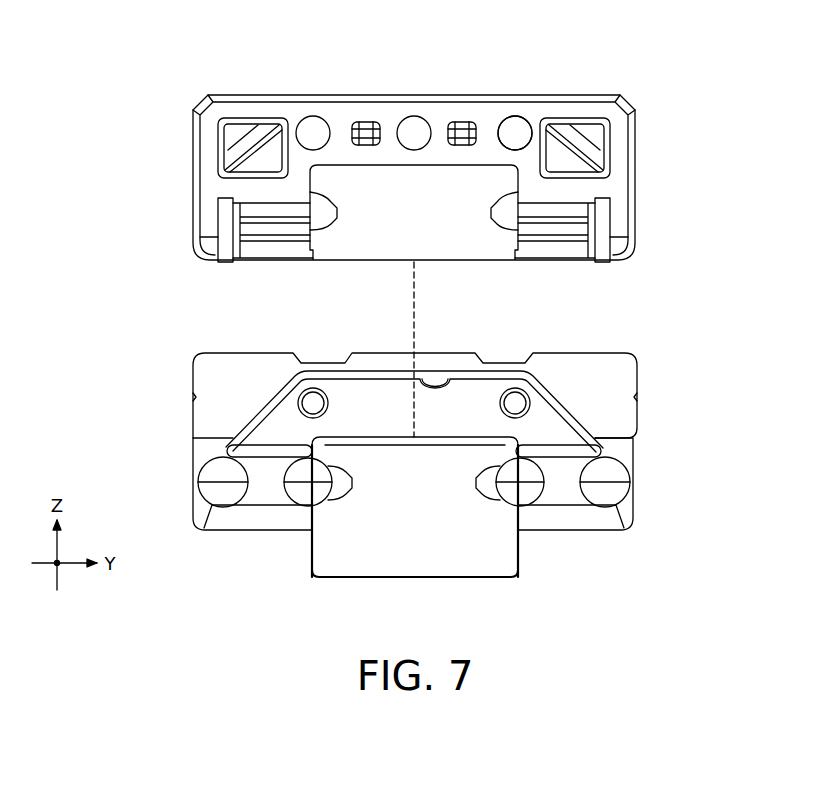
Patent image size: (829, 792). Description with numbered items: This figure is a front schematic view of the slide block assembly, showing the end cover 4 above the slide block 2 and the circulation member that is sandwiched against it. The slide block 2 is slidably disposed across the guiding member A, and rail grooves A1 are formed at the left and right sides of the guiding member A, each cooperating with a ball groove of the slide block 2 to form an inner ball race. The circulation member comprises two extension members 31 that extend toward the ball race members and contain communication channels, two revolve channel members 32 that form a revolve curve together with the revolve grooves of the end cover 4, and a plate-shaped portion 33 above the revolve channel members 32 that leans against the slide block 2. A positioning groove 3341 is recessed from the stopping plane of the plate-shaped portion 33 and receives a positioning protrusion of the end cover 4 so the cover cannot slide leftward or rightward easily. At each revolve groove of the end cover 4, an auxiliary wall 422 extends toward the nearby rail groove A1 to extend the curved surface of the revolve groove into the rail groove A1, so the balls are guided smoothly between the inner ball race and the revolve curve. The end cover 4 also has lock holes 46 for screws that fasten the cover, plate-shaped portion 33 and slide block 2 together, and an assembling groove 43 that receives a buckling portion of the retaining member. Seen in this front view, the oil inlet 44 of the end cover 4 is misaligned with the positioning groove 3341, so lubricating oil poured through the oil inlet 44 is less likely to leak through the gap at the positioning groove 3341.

The slide block 2 is at (625, 415).
The end cover 4 is at (625, 100).
The extension member 31 is at (624, 451).
The revolve channel member 32 is at (573, 498).
The plate-shaped portion 33 is at (374, 395).
The positioning groove 3341 is at (440, 386).
The assembling groove 43 is at (600, 212).
The oil inlet 44 is at (414, 126).
The lock hole 46 is at (515, 126).
The auxiliary wall 422 is at (498, 210).
The guiding member A is at (426, 558).
The rail groove A1 is at (480, 492).